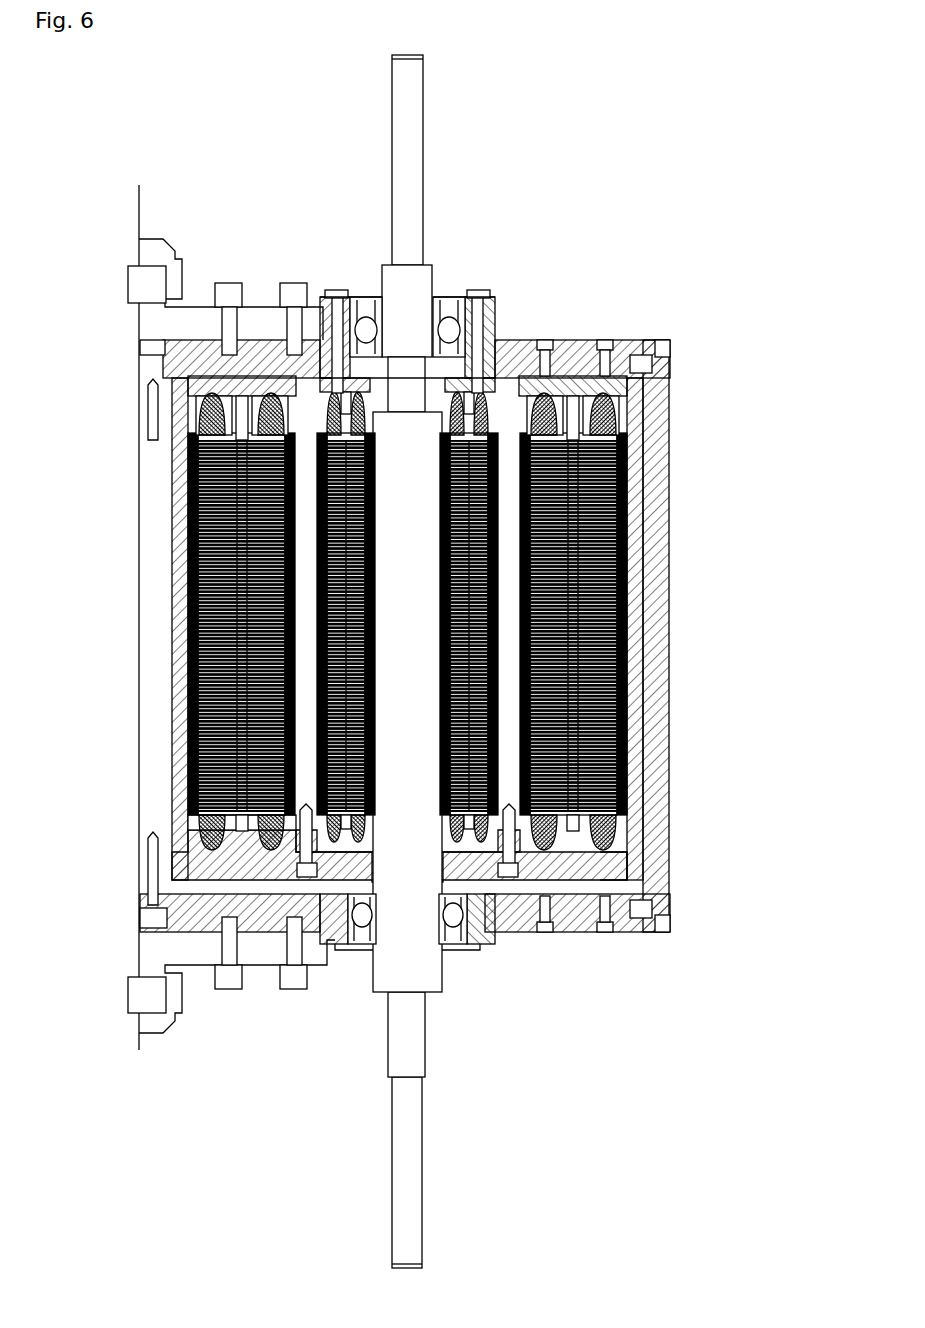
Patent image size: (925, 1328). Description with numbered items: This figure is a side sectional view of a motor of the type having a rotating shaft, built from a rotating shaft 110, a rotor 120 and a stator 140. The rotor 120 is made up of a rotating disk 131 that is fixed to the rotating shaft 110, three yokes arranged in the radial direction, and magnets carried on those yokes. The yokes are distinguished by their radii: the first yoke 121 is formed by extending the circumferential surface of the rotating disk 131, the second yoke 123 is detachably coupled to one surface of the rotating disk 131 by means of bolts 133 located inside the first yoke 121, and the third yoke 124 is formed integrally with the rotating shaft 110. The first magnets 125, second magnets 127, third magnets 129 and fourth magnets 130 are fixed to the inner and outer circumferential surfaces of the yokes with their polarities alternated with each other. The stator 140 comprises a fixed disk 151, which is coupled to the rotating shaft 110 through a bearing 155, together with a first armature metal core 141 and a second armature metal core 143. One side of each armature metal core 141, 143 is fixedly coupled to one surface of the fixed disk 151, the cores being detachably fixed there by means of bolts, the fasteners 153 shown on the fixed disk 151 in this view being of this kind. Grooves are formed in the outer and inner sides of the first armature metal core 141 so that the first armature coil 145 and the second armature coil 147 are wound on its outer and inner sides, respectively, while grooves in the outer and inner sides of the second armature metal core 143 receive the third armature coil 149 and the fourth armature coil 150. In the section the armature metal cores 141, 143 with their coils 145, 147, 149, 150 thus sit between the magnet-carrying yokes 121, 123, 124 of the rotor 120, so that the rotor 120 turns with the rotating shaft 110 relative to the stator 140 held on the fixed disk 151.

The rotating shaft 110 is at (414, 113).
The rotor 120 is at (158, 545).
The first yoke 121 is at (643, 540).
The second yoke 123 is at (545, 340).
The third yoke 124 is at (421, 433).
The first magnets 125 is at (622, 418).
The second magnets 127 is at (575, 342).
The third magnets 129 is at (503, 345).
The fourth magnets 130 is at (425, 820).
The rotating disk 131 is at (553, 856).
The bolts 133 is at (307, 870).
The stator 140 is at (585, 856).
The first armature metal core 141 is at (627, 828).
The second armature metal core 143 is at (306, 455).
The first armature coil 145 is at (623, 850).
The second armature coil 147 is at (262, 845).
The third armature coil 149 is at (321, 445).
The fourth armature coil 150 is at (344, 420).
The fixed disk 151 is at (650, 345).
The bolt 153 is at (605, 342).
The bearing 155 is at (357, 905).